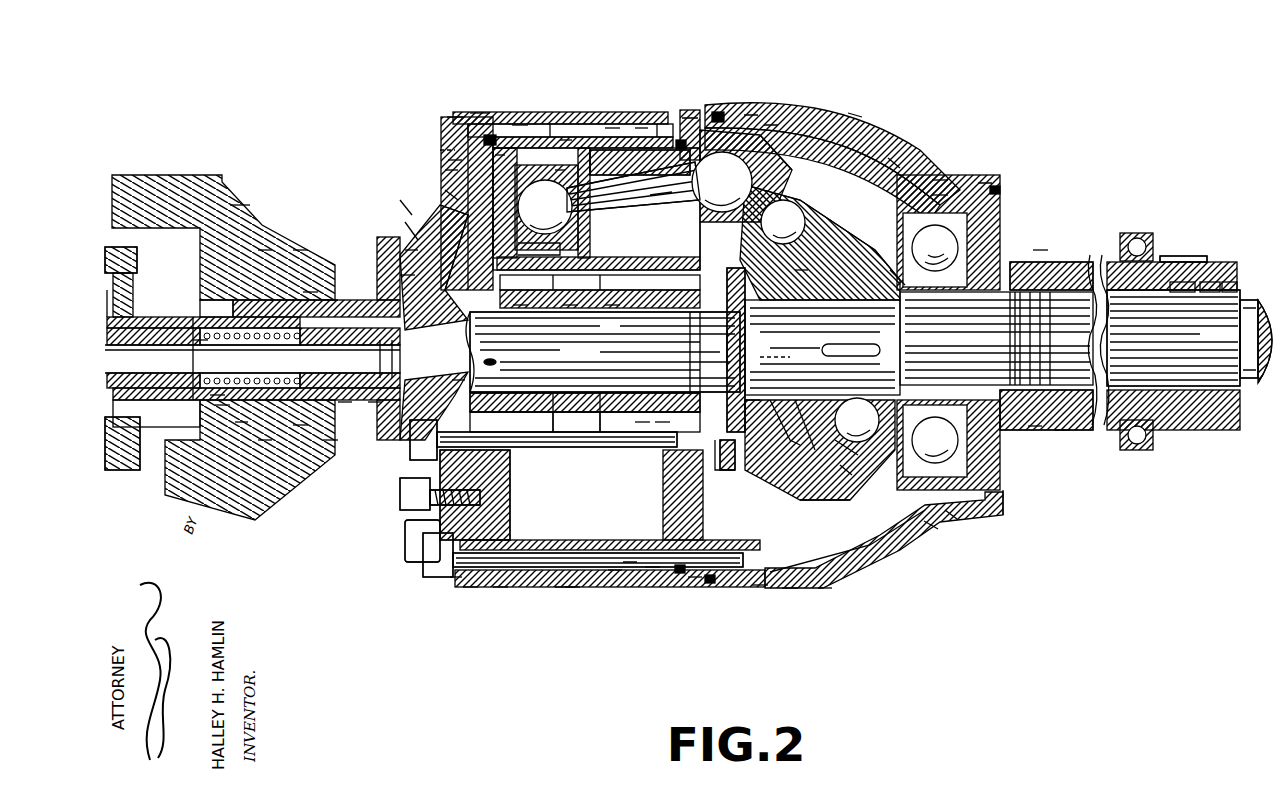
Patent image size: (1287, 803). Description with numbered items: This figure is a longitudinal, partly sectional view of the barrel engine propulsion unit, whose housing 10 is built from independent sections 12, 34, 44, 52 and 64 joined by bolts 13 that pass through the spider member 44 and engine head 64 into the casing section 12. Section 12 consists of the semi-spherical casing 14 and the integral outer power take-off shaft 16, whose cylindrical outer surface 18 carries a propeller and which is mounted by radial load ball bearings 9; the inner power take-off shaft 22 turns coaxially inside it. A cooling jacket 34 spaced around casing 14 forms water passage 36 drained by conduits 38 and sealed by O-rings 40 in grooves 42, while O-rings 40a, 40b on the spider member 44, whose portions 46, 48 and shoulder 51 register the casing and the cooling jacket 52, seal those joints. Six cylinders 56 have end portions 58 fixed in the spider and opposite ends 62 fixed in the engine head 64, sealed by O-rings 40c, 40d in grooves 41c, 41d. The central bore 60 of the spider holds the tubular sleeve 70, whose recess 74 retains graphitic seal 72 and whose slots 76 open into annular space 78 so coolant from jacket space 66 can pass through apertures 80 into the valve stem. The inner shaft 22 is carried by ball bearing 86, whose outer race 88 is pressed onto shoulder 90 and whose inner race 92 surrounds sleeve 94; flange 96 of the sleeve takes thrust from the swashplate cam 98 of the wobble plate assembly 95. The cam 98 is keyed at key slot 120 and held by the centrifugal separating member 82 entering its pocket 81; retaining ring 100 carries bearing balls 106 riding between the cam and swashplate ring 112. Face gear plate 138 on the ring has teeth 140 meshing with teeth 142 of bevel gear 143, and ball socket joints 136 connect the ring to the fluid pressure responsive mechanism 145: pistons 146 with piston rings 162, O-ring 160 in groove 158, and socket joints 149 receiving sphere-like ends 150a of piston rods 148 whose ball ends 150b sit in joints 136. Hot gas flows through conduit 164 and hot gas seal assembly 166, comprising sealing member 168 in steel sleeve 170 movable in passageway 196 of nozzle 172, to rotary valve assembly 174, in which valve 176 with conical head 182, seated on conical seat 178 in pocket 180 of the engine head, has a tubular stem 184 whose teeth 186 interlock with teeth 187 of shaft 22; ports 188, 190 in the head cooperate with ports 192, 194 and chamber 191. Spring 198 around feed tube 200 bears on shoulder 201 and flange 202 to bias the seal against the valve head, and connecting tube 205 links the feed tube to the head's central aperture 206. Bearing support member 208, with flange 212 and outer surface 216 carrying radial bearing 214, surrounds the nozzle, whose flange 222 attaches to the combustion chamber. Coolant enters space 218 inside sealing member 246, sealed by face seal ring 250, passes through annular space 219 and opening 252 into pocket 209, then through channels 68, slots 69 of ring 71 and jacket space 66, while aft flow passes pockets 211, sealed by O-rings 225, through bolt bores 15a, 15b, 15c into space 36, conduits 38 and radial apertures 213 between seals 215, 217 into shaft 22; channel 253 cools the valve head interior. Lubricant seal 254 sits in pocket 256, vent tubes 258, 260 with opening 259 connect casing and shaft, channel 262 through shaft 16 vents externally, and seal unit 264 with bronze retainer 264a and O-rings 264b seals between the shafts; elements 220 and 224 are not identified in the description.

The radial load ball bearing 9 is at (1140, 450).
The housing 10 is at (571, 617).
The housing section 12 is at (855, 113).
The bolt 13 is at (615, 570).
The semi-spherical hollow body 14 is at (895, 160).
The radial bore 15a is at (470, 587).
The intermediate bore 15b is at (572, 587).
The radial bore 15c is at (825, 586).
The outer tubular power take-off shaft 16 is at (1100, 262).
The cylindrical outer surface portion 18 is at (1205, 258).
The inner tubular power take-off shaft 22 is at (1242, 382).
The cooling jacket 34 is at (790, 588).
The cooling water passage 36 is at (950, 515).
The water conduit 38 is at (1005, 458).
The O-ring 40 is at (718, 112).
The O-ring 40a is at (680, 572).
The O-ring 40b is at (710, 582).
The O-ring 40c is at (490, 135).
The O-ring 40d is at (680, 140).
The annular groove 41c is at (500, 155).
The annular groove 41d is at (690, 148).
The annular groove 42 is at (750, 115).
The spider member 44 is at (688, 118).
The spider member portion 46 is at (760, 585).
The spider member portion 48 is at (652, 567).
The shoulder 51 is at (695, 577).
The cooling jacket housing section 52 is at (480, 113).
The cylinder 56 is at (612, 128).
The cylinder end portion 58 is at (645, 148).
The central bore 60 is at (645, 412).
The cylinder end 62 is at (455, 160).
The engine head 64 is at (410, 540).
The cooling jacket space 66 is at (640, 128).
The flow channel 68 is at (440, 150).
The slot 69 is at (455, 117).
The tubular sleeve 70 is at (568, 412).
The cylindrical ring 71 is at (500, 587).
The graphitic annular seal 72 is at (640, 425).
The annular recess 74 is at (612, 305).
The slot 76 is at (520, 305).
The annular space 78 is at (570, 305).
The aperture 80 is at (497, 364).
The annular pocket 81 is at (800, 270).
The centrifugal separating member 82 is at (745, 350).
The ball bearing assembly 86 is at (950, 250).
The outer race 88 is at (940, 180).
The internal annular support shoulder 90 is at (940, 195).
The inner race 92 is at (895, 270).
The annular sleeve 94 is at (1035, 428).
The wobble plate conversion assembly 95 is at (845, 490).
The flange 96 is at (930, 525).
The swashplate cam 98 is at (866, 216).
The ball bearing retaining ring 100 is at (800, 215).
The bearing ball 106 is at (845, 450).
The swashplate ring 112 is at (770, 125).
The key slot 120 is at (880, 350).
The ball socket joint 136 is at (780, 157).
The face gear plate 138 is at (805, 455).
The teeth 140 is at (775, 438).
The teeth 142 is at (735, 455).
The bevel gear 143 is at (727, 460).
The fluid pressure responsive mechanism 145 is at (618, 212).
The piston 146 is at (560, 248).
The piston rod 148 is at (660, 198).
The socket joint 149 is at (560, 170).
The sphere-like end 150a is at (546, 207).
The ball end portion 150b is at (722, 182).
The groove 158 is at (565, 140).
The O-ring 160 is at (637, 163).
The piston ring 162 is at (520, 125).
The tubular conduit 164 is at (252, 359).
The hot gas seal assembly 166 is at (338, 366).
The sealing member 168 is at (330, 440).
The steel sleeve 170 is at (240, 205).
The hot gas nozzle 172 is at (345, 402).
The rotary valve assembly 174 is at (405, 275).
The rotary valve 176 is at (520, 408).
The conical seat 178 is at (505, 447).
The cylindrical pocket 180 is at (405, 222).
The conical valve head 182 is at (460, 383).
The tubular body portion 184 is at (615, 318).
The teeth 186 is at (690, 362).
The teeth 187 is at (727, 350).
The inlet port 188 is at (465, 358).
The outlet port 190 is at (470, 370).
The chamber 191 is at (445, 170).
The port 192 is at (400, 200).
The port 194 is at (445, 190).
The tubular passageway 196 is at (215, 405).
The spring 198 is at (210, 395).
The feed tube 200 is at (215, 340).
The internal annular shoulder 201 is at (200, 340).
The flange 202 is at (305, 375).
The connecting tube 205 is at (375, 402).
The central aperture 206 is at (378, 425).
The bearing support member 208 is at (265, 250).
The annular pocket 209 is at (410, 250).
The annular pocket 211 is at (455, 577).
The flange 212 is at (425, 500).
The radial aperture 213 is at (1017, 315).
The radial load bearing 214 is at (300, 250).
The annular seal 215 is at (1040, 250).
The outer surface 216 is at (300, 425).
The annular seal 217 is at (1062, 430).
The annular space 218 is at (205, 328).
The annular space 219 is at (310, 292).
The flange 220 is at (140, 283).
The flange 222 is at (118, 470).
The shaft end 224 is at (1266, 385).
The O-ring 225 is at (510, 570).
The sealing member 246 is at (235, 422).
The face seal ring 250 is at (265, 440).
The annular opening 252 is at (330, 300).
The channel 253 is at (510, 492).
The lubricant seal 254 is at (750, 405).
The annular pocket 256 is at (662, 425).
The vent tube 258 is at (790, 357).
The opening 259 is at (700, 250).
The vent tube 260 is at (1080, 422).
The channel 262 is at (1050, 275).
The annular seal unit 264 is at (1232, 290).
The bronze retainer 264a is at (1228, 285).
The O-ring 264b is at (1215, 280).